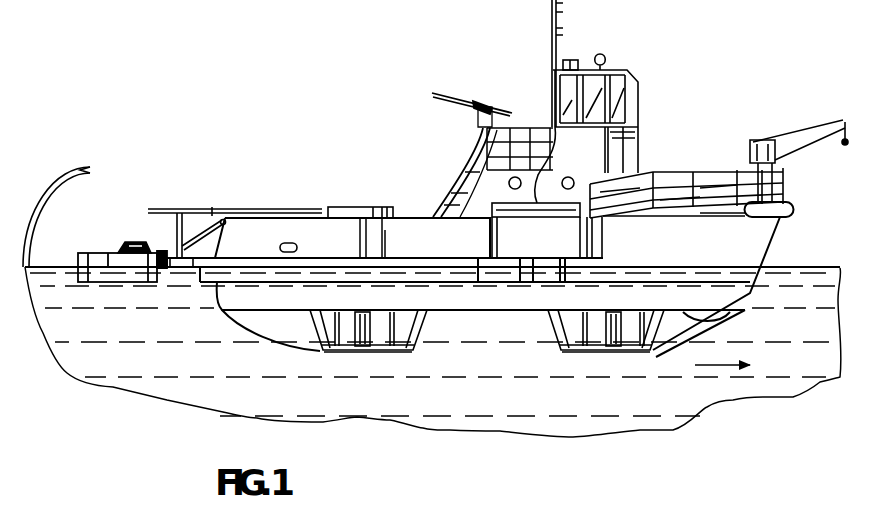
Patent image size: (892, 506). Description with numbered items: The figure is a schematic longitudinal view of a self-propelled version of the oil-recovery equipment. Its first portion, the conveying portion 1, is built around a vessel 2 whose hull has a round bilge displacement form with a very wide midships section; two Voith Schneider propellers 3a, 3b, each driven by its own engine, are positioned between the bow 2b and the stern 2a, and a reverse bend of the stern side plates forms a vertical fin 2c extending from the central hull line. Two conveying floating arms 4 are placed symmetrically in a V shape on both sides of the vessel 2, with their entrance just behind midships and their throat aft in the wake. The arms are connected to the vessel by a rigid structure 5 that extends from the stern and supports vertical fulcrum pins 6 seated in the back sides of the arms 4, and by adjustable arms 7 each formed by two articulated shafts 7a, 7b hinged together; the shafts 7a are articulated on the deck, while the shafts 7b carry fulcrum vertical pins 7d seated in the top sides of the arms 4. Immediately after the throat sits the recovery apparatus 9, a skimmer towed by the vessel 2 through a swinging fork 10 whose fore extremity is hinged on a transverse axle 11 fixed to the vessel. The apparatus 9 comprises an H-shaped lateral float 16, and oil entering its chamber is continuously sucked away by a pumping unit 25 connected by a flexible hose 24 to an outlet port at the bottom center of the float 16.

The conveying portion 1 is at (281, 286).
The vessel 2 is at (640, 166).
The stern 2a is at (226, 309).
The bow 2b is at (752, 296).
The vertical fin 2c is at (215, 290).
The Voith Schneider propeller 3a is at (364, 355).
The Voith Schneider propeller 3b is at (604, 355).
The conveying floating arm 4 is at (387, 257).
The rigid structure 5 is at (250, 210).
The vertical fulcrum pin 6 is at (166, 233).
The adjustable arm 7 is at (503, 196).
The articulated shaft 7a is at (539, 224).
The articulated shaft 7b is at (553, 116).
The fulcrum vertical pin 7d is at (492, 231).
The recovery apparatus 9 is at (109, 251).
The swinging fork 10 is at (196, 232).
The transverse axle 11 is at (211, 208).
The lateral float 16 is at (134, 265).
The flexible hose 24 is at (80, 172).
The pumping unit 25 is at (347, 207).